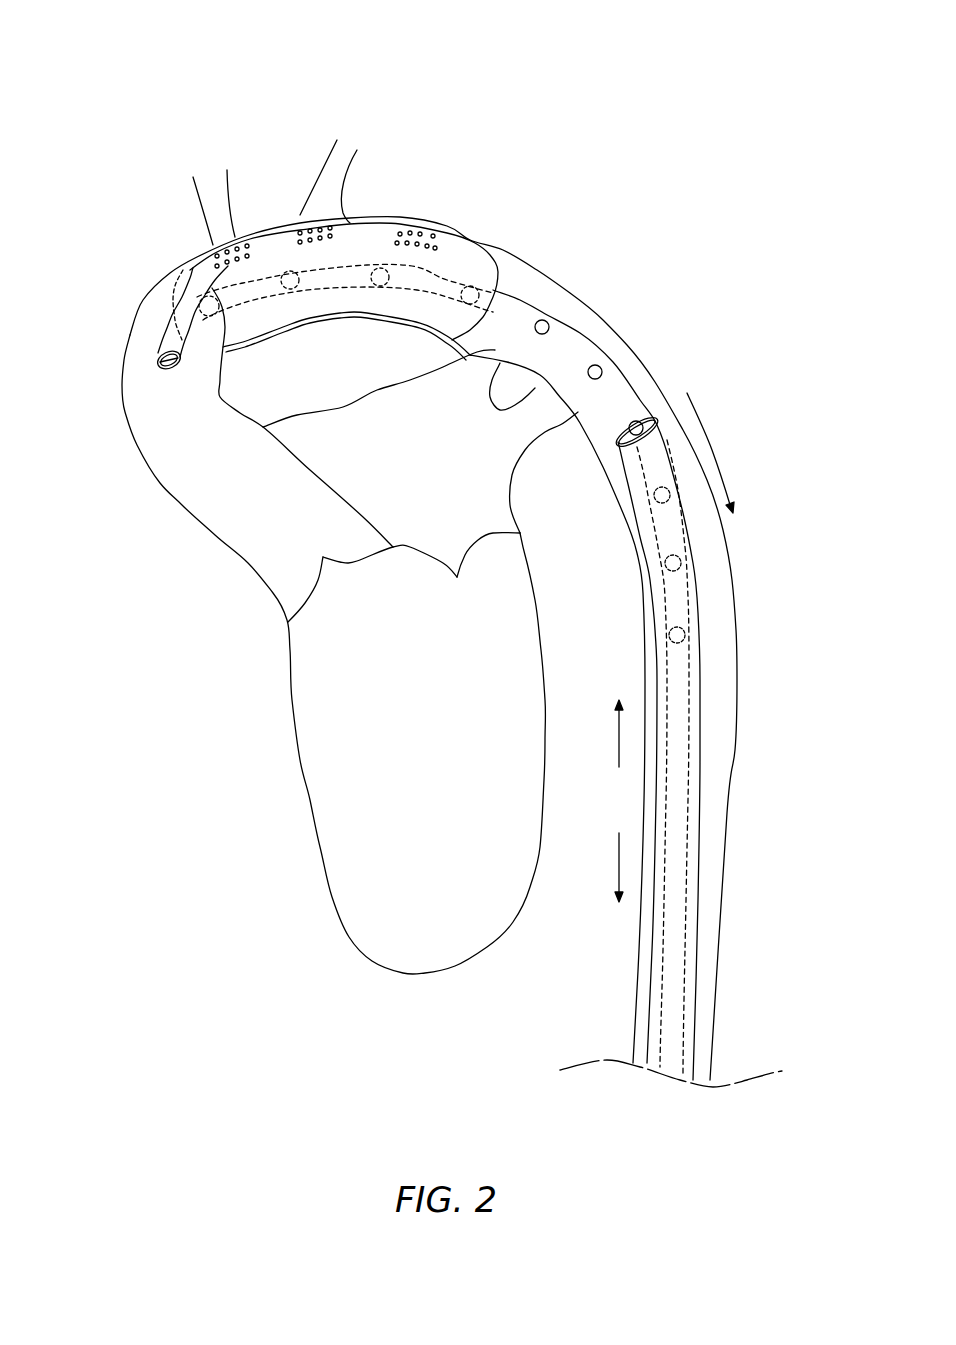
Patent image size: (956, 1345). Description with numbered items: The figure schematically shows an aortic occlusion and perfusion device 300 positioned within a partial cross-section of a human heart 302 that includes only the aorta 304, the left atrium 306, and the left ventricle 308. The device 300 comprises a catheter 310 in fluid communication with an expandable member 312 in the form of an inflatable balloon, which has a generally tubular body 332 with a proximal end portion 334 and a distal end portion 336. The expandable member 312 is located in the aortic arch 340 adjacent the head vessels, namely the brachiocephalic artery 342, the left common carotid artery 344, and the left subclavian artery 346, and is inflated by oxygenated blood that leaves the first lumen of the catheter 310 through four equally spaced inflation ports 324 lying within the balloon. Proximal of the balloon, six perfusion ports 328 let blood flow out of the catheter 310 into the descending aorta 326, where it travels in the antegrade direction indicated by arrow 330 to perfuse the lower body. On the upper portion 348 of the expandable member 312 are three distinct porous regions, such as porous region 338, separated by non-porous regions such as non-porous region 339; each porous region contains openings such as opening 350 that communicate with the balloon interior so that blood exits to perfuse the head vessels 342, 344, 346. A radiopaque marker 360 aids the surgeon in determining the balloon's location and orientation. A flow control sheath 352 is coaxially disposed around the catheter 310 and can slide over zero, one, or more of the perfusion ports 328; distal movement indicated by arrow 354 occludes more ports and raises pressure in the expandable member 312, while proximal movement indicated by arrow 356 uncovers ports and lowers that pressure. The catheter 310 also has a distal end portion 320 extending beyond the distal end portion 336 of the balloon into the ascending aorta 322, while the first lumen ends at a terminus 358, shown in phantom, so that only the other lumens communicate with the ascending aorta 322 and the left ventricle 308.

The aortic occlusion and perfusion device 300 is at (252, 77).
The heart 302 is at (272, 716).
The aorta 304 is at (132, 305).
The left atrium 306 is at (427, 479).
The left ventricle 308 is at (417, 712).
The catheter 310 is at (579, 334).
The expandable member 312 is at (363, 235).
The distal end portion 320 is at (160, 340).
The ascending aorta 322 is at (182, 505).
The inflation ports 324 is at (292, 290).
The descending aorta 326 is at (737, 667).
The perfusion ports 328 is at (600, 371).
The arrow 330 is at (727, 473).
The tubular body 332 is at (253, 234).
The proximal end portion 334 is at (473, 255).
The distal end portion 336 is at (193, 267).
The porous region 338 is at (441, 236).
The non-porous region 339 is at (388, 242).
The aortic arch 340 is at (350, 322).
The brachiocephalic artery 342 is at (193, 195).
The left common carotid artery 344 is at (320, 173).
The left subclavian artery 346 is at (385, 234).
The upper portion 348 is at (350, 236).
The opening 350 is at (415, 232).
The flow control sheath 352 is at (700, 637).
The arrow 354 is at (618, 743).
The arrow 356 is at (618, 857).
The terminus 358 is at (203, 320).
The radiopaque marker 360 is at (452, 322).